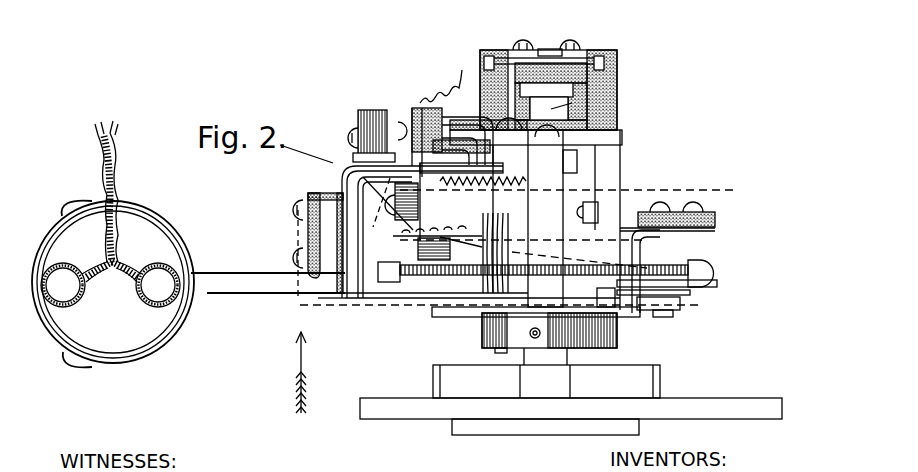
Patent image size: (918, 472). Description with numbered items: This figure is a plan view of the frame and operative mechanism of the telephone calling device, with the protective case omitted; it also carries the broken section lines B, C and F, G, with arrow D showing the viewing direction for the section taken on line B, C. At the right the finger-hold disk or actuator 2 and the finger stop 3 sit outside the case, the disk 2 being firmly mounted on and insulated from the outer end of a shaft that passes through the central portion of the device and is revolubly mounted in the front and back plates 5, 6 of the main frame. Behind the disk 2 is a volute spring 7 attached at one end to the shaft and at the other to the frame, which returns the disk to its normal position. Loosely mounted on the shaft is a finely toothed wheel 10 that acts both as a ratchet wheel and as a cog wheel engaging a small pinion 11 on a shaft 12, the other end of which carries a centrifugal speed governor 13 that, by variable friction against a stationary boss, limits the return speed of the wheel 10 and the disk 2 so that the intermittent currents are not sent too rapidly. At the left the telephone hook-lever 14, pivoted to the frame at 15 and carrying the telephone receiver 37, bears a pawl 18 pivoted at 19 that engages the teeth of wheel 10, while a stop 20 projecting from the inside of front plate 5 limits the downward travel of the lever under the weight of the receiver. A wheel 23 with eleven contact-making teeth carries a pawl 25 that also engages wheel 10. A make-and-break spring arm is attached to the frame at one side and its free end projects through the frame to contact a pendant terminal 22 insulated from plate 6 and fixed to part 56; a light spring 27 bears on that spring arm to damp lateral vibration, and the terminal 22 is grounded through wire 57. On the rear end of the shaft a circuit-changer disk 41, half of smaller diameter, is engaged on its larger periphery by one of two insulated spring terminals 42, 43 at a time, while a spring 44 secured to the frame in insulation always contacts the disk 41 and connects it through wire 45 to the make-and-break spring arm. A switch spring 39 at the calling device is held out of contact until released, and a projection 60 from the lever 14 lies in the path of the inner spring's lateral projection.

The finger-hold disk 2 is at (690, 405).
The finger stop 3 is at (500, 428).
The front plate 5 is at (460, 313).
The back plate 6 is at (622, 138).
The volute spring 7 is at (505, 335).
The wheel 10 is at (387, 278).
The pinion 11 is at (460, 282).
The shaft 12 is at (487, 200).
The centrifugal speed governor 13 is at (510, 162).
The telephone hook-lever 14 is at (265, 283).
The pivot 15 is at (422, 274).
The pawl 18 is at (707, 280).
The pivot 19 is at (617, 295).
The stop 20 is at (612, 300).
The pendant terminal 22 is at (357, 170).
The wheel 23 is at (390, 198).
The pawl 25 is at (318, 296).
The spring 27 is at (717, 228).
The telephone receiver 37 is at (113, 244).
The switch spring 39 is at (425, 112).
The disk 41 is at (590, 56).
The spring terminal 42 is at (607, 62).
The spring terminal 43 is at (486, 63).
The spring 44 is at (547, 50).
The wire 45 is at (760, 197).
The part 56 is at (350, 132).
The wire 57 is at (473, 111).
The projection 60 is at (348, 128).
The section line point B is at (345, 305).
The section line point C is at (637, 322).
The arrow D is at (305, 362).
The section line point F is at (400, 230).
The section line point G is at (747, 191).